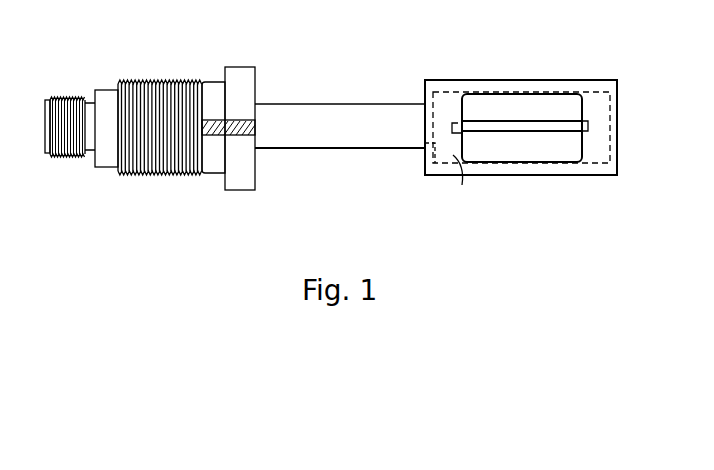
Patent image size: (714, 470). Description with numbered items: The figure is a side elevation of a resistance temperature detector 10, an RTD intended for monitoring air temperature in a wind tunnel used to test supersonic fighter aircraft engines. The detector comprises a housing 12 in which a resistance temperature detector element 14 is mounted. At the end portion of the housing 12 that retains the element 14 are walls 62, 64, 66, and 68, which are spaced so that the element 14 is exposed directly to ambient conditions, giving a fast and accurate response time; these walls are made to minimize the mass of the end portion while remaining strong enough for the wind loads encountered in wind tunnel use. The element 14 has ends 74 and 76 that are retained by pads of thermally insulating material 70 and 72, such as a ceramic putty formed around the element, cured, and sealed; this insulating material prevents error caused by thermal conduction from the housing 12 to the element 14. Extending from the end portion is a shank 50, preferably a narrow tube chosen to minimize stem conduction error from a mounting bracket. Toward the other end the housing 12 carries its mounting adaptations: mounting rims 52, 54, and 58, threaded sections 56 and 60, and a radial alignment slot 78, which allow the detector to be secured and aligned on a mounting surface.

The resistance temperature detector 10 is at (328, 165).
The housing 12 is at (457, 80).
The resistance temperature detector element 14 is at (520, 121).
The shank 50 is at (340, 103).
The mounting rim 52 is at (240, 67).
The mounting rim 54 is at (212, 81).
The threaded section 56 is at (160, 80).
The mounting rim 58 is at (107, 88).
The threaded section 60 is at (64, 97).
The wall 62 is at (556, 79).
The wall 64 is at (552, 176).
The wall 66 is at (618, 128).
The wall 68 is at (426, 152).
The thermally insulating material 70 is at (598, 103).
The thermally insulating material 72 is at (462, 185).
The end of element 74 is at (590, 127).
The end of element 76 is at (453, 122).
The radial alignment slot 78 is at (240, 136).